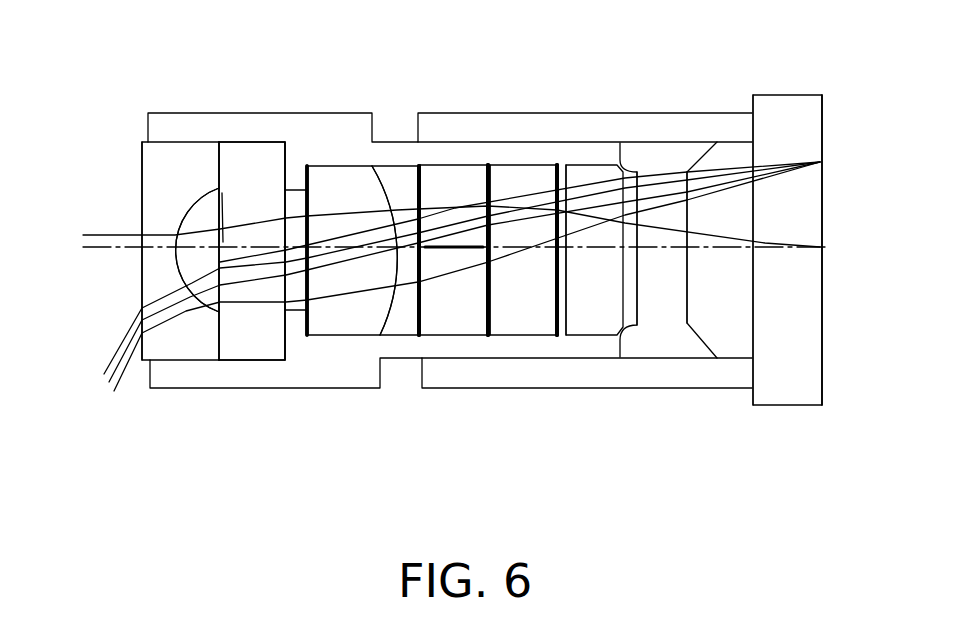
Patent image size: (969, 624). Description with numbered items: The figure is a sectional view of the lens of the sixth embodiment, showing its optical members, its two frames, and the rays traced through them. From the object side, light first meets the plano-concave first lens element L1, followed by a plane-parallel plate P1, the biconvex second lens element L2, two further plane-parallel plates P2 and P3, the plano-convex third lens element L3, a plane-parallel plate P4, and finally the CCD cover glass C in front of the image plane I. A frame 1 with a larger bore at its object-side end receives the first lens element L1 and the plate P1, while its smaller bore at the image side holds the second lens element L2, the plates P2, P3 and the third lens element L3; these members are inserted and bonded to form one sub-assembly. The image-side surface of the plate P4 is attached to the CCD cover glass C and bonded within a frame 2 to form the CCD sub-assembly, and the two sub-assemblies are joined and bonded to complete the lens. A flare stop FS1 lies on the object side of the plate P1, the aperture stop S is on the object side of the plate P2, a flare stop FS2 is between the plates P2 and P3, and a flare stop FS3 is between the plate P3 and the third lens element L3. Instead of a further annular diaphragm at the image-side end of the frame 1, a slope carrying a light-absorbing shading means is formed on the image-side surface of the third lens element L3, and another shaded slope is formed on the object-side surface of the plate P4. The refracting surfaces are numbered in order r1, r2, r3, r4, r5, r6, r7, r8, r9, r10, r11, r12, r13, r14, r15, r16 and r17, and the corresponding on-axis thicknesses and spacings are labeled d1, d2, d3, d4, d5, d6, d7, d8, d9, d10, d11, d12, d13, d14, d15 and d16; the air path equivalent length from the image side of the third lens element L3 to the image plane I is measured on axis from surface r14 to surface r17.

The frame 1 is at (303, 390).
The frame 2 is at (658, 388).
The first lens element L1 is at (167, 362).
The second lens element L2 is at (358, 337).
The third lens element L3 is at (588, 338).
The plane-parallel plate P1 is at (246, 347).
The plane-parallel plate P2 is at (453, 337).
The plane-parallel plate P3 is at (520, 337).
The plane-parallel plate P4 is at (727, 358).
The aperture stop S is at (416, 340).
The flare stop FS1 is at (208, 360).
The flare stop FS2 is at (488, 338).
The flare stop FS3 is at (557, 338).
The CCD cover glass C is at (795, 405).
The image plane I is at (822, 372).
The lens surface r1 is at (140, 168).
The lens surface r2 is at (200, 197).
The lens surface r3 is at (219, 160).
The lens surface r4 is at (222, 198).
The lens surface r5 is at (285, 140).
The lens surface r6 is at (307, 192).
The lens surface r7 is at (372, 168).
The lens surface r8 is at (418, 180).
The lens surface r9 is at (421, 222).
The lens surface r10 is at (488, 180).
The lens surface r11 is at (490, 210).
The lens surface r12 is at (557, 205).
The lens surface r13 is at (566, 180).
The lens surface r14 is at (637, 172).
The lens surface r15 is at (687, 172).
The lens surface r16 is at (753, 155).
The lens surface r17 is at (822, 122).
The axial distance d1 is at (155, 255).
The axial distance d2 is at (198, 252).
The axial distance d3 is at (222, 242).
The axial distance d4 is at (243, 250).
The axial distance d5 is at (292, 247).
The axial distance d6 is at (335, 252).
The axial distance d7 is at (405, 252).
The axial distance d8 is at (425, 252).
The axial distance d9 is at (447, 250).
The axial distance d10 is at (495, 252).
The axial distance d11 is at (522, 247).
The axial distance d12 is at (565, 252).
The axial distance d13 is at (622, 250).
The axial distance d14 is at (658, 250).
The axial distance d15 is at (718, 250).
The axial distance d16 is at (788, 250).